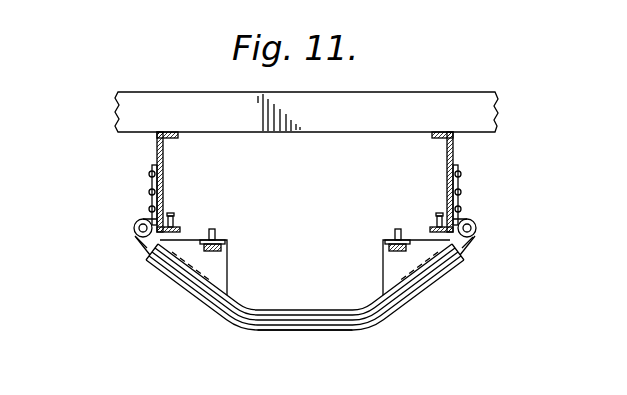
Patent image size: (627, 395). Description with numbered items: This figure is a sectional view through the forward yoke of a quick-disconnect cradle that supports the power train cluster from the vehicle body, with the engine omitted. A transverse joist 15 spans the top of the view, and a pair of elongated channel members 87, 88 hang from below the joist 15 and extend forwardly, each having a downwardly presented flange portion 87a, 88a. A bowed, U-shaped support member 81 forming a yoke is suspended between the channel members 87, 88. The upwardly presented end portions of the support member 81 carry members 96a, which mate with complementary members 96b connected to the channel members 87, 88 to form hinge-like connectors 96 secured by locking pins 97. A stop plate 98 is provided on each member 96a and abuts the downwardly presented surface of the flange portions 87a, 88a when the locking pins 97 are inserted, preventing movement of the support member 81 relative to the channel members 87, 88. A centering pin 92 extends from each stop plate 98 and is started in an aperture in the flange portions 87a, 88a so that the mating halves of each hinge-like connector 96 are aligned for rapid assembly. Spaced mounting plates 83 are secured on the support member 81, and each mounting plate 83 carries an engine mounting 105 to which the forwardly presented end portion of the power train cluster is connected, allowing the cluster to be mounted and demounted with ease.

The transverse joist 15 is at (186, 98).
The support member 81 is at (312, 324).
The mounting plate 83 is at (222, 282).
The elongated channel member 87 is at (431, 137).
The flange portion 87a is at (432, 232).
The elongated channel member 88 is at (181, 137).
The flange portion 88a is at (180, 230).
The centering pin 92 is at (172, 220).
The hinge-like connector 96 is at (128, 223).
The hinge connector member 96a is at (148, 248).
The complementary hinge connector member 96b is at (153, 185).
The locking pin 97 is at (136, 230).
The stop plate 98 is at (185, 234).
The engine mounting 105 is at (228, 240).